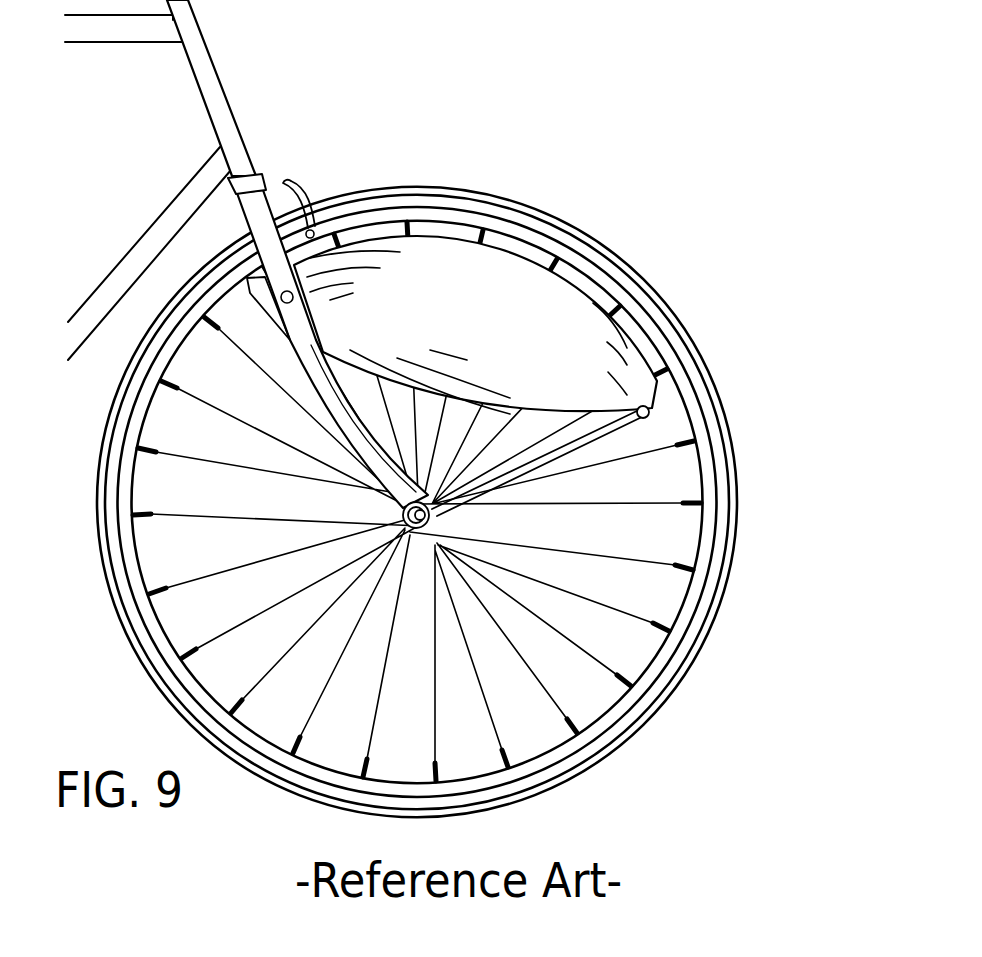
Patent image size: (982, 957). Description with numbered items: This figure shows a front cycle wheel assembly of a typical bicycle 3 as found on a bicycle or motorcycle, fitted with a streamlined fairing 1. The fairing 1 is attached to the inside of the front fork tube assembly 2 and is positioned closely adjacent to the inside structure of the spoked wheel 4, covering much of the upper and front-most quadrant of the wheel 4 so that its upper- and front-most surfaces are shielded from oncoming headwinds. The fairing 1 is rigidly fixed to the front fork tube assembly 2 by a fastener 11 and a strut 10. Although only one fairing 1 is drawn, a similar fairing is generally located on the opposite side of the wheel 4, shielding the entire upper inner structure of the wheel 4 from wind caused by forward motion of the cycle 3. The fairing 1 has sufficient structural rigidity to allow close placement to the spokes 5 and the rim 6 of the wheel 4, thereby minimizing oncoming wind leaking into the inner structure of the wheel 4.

The streamlined fairing 1 is at (480, 297).
The front fork tube assembly 2 is at (320, 392).
The bicycle 3 is at (210, 80).
The spoked wheel 4 is at (667, 678).
The spokes 5 is at (205, 633).
The rim 6 is at (687, 610).
The strut 10 is at (548, 447).
The fastener 11 is at (257, 277).